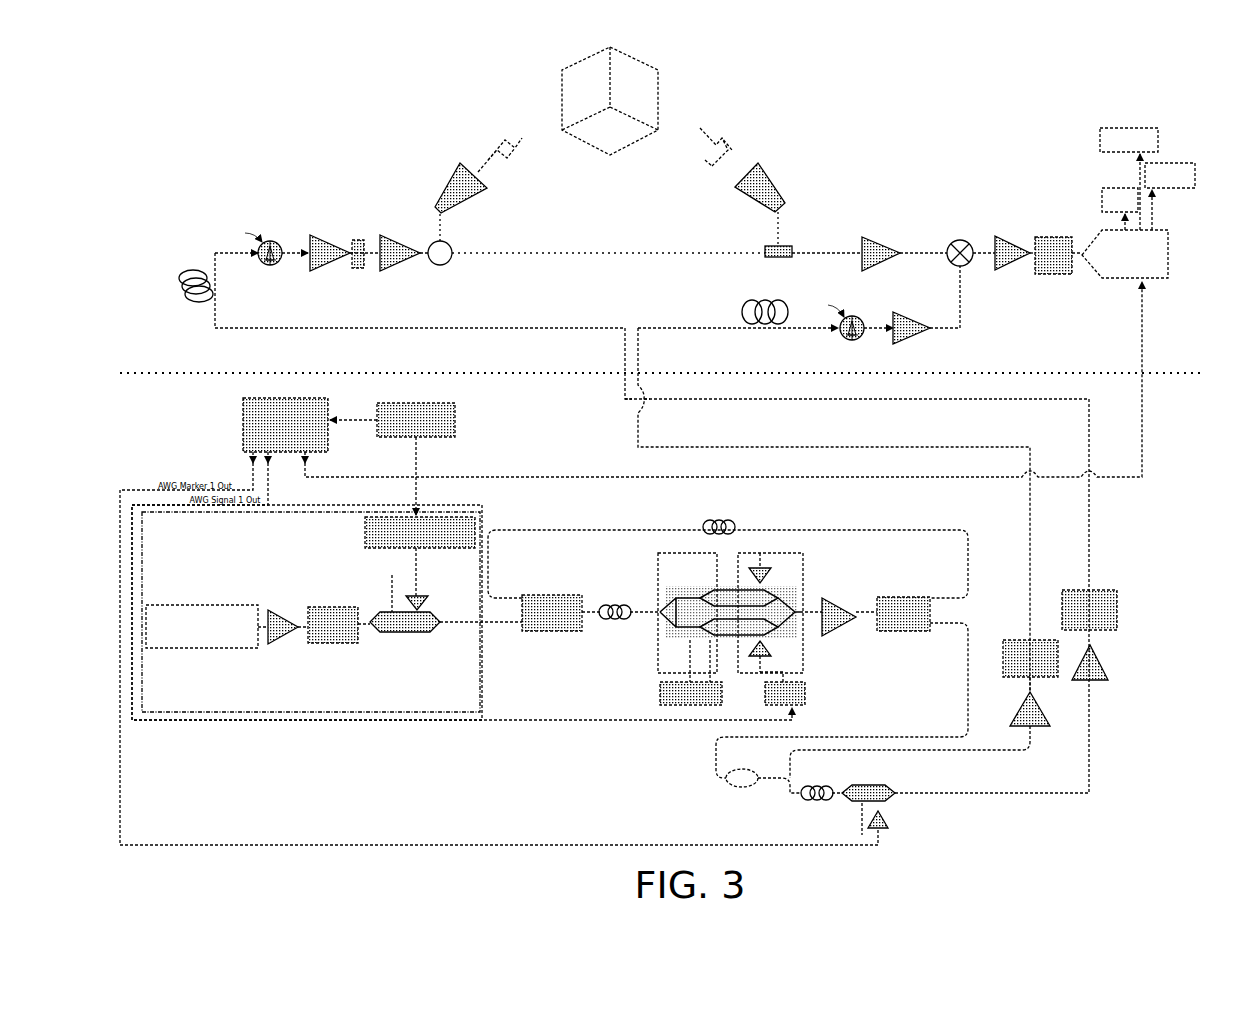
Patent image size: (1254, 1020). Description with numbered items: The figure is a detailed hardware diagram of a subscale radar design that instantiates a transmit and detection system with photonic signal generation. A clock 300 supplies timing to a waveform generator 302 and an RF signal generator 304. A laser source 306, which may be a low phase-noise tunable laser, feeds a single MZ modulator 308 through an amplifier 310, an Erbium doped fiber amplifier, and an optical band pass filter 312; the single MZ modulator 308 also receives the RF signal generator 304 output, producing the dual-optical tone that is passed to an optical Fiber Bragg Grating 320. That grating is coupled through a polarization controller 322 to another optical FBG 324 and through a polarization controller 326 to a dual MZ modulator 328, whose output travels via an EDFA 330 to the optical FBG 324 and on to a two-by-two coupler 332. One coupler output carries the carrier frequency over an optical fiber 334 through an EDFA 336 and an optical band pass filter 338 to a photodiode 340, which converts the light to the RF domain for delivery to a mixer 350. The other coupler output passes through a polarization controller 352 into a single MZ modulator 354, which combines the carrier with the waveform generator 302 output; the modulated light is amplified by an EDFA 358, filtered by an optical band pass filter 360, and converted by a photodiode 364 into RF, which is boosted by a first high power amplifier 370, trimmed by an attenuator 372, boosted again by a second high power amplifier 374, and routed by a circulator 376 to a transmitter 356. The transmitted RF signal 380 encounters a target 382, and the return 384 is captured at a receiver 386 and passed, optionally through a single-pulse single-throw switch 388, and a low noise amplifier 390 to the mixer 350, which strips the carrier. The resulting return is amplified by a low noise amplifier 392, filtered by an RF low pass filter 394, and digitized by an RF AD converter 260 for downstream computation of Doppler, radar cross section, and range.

The RF AD converter 260 is at (1170, 250).
The clock 300 is at (457, 418).
The waveform generator 302 is at (243, 410).
The RF signal generator 304 is at (475, 516).
The laser source 306 is at (156, 605).
The single MZ modulator 308 is at (435, 640).
The amplifier 310 is at (282, 636).
The optical band pass filter 312 is at (337, 607).
The optical Fiber Bragg Grating 320 is at (554, 597).
The polarization controller 322 is at (740, 526).
The optical FBG 324 is at (898, 633).
The polarization controller 326 is at (617, 621).
The dual MZ modulator 328 is at (655, 565).
The EDFA 330 is at (850, 610).
The 2×2 coupler 332 is at (735, 782).
The optical fiber 334 is at (640, 325).
The EDFA 336 is at (1038, 718).
The optical band pass filter 338 is at (1030, 640).
The photodiode 340 is at (847, 340).
The mixer 350 is at (967, 235).
The polarization controller 352 is at (822, 801).
The single MZ modulator 354 is at (915, 807).
The transmitter 356 is at (458, 190).
The EDFA 358 is at (1104, 675).
The optical band pass filter 360 is at (210, 320).
The photodiode 364 is at (258, 252).
The first high power amplifier 370 is at (323, 266).
The attenuator 372 is at (357, 240).
The second high power amplifier 374 is at (398, 260).
The circulator 376 is at (452, 258).
The transmitted RF signal 380 is at (505, 135).
The target 382 is at (655, 72).
The return 384 is at (735, 138).
The receiver 386 is at (765, 188).
The single-pulse single-throw switch 388 is at (762, 248).
The low noise amplifier 390 is at (885, 250).
The low noise amplifier 392 is at (1002, 270).
The RF low pass filter 394 is at (1045, 237).